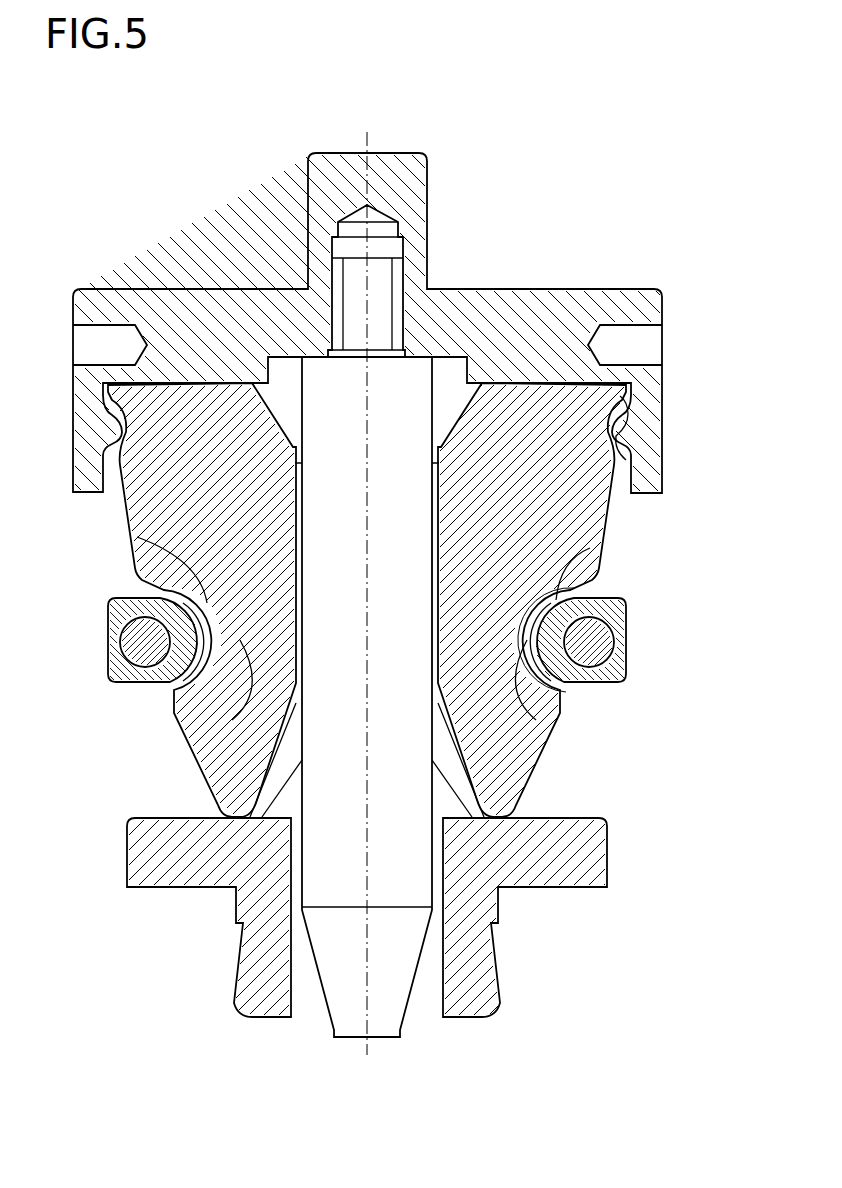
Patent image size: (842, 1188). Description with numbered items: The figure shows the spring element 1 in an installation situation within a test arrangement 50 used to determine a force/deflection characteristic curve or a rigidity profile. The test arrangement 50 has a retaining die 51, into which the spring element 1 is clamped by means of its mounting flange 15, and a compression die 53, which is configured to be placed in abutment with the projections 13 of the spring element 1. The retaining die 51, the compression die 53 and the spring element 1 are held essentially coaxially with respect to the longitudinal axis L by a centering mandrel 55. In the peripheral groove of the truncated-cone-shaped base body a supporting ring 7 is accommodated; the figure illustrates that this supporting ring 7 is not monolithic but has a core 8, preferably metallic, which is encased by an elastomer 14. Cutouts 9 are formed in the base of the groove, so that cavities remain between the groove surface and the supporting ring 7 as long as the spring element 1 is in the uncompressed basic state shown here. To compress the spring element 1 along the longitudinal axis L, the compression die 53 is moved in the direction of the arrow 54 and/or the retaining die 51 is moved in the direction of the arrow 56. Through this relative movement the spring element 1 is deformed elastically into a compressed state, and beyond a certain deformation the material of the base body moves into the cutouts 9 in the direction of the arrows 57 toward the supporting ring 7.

The test arrangement 50 is at (143, 167).
The retaining die 51 is at (127, 305).
The spring element 1 is at (120, 465).
The mounting flange 15 is at (622, 408).
The centering mandrel 55 is at (412, 486).
The arrow 56 is at (724, 330).
The arrow 54 is at (710, 784).
The arrows 57 is at (137, 537).
The cutouts 9 is at (556, 567).
The supporting ring 7 is at (395, 645).
The core 8 is at (604, 652).
The elastomer 14 is at (603, 683).
The projections 13 is at (233, 808).
The compression die 53 is at (570, 895).
The longitudinal axis L is at (370, 137).